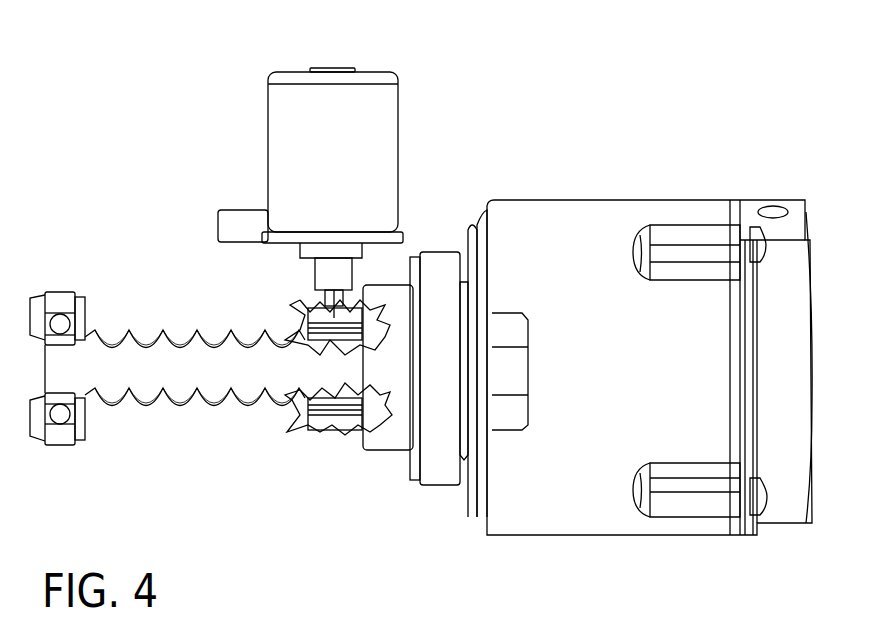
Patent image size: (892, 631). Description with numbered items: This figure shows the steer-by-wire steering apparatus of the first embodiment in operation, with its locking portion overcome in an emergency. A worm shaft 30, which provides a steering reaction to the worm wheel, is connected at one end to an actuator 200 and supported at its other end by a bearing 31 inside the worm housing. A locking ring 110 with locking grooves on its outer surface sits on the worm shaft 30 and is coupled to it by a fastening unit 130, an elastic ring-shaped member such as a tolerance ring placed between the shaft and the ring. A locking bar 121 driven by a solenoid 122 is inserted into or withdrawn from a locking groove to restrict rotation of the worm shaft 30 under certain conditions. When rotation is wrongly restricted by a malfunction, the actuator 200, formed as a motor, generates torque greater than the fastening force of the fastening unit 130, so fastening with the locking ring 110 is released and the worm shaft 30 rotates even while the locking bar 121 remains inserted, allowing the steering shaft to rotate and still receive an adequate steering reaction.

The solenoid 122 is at (372, 95).
The locking bar 121 is at (336, 305).
The fastening unit 130 is at (313, 427).
The locking ring 110 is at (350, 432).
The worm shaft 30 is at (130, 400).
The bearing 31 is at (55, 446).
The actuator 200 is at (592, 222).